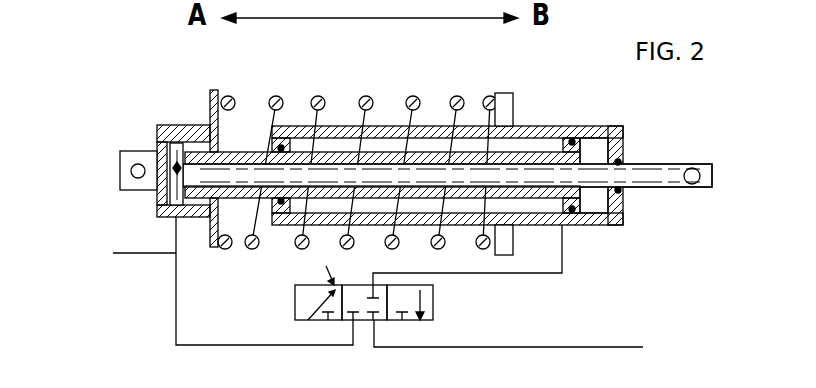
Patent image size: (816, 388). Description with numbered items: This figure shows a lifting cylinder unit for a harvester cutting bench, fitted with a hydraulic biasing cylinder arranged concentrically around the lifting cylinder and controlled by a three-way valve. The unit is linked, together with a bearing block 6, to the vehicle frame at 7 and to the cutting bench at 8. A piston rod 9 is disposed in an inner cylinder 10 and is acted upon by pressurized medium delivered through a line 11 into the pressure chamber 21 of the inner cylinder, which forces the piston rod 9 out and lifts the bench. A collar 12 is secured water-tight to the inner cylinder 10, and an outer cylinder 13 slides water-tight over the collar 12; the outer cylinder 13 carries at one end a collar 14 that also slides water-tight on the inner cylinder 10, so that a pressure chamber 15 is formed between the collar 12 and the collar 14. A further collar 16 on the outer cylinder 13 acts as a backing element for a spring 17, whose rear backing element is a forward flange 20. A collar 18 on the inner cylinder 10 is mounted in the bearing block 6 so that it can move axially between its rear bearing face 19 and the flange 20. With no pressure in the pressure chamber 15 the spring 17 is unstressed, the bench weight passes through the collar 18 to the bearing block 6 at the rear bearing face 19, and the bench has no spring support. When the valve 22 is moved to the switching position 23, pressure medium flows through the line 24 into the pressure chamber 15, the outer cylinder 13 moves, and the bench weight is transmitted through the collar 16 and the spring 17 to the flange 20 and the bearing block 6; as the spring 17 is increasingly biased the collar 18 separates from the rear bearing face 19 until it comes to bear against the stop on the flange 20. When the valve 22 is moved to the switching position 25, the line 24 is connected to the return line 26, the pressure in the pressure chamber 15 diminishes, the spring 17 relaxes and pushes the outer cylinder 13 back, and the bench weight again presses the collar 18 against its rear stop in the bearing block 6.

The bearing block 6 is at (198, 125).
The vehicle frame linkage point 7 is at (121, 172).
The cutting bench linkage point 8 is at (692, 168).
The piston rod 9 is at (650, 173).
The inner cylinder 10 is at (252, 150).
The line 11 is at (175, 238).
The collar 12 is at (563, 138).
The outer cylinder 13 is at (386, 128).
The collar 14 is at (282, 146).
The pressure chamber 15 is at (325, 142).
The collar 16 is at (504, 93).
The spring 17 is at (463, 104).
The collar 18 is at (170, 125).
The rear bearing face 19 is at (157, 152).
The flange 20 is at (205, 125).
The pressure chamber 21 is at (198, 180).
The valve 22 is at (321, 262).
The switching position 23 is at (300, 307).
The line 24 is at (527, 275).
The switching position 25 is at (433, 305).
The return line 26 is at (590, 347).